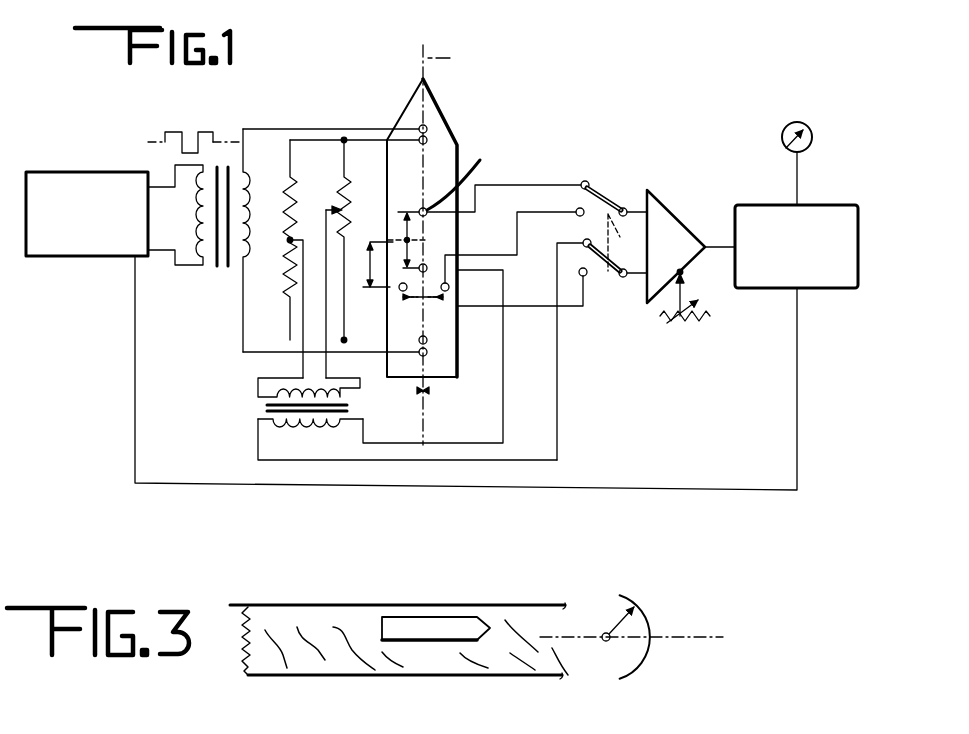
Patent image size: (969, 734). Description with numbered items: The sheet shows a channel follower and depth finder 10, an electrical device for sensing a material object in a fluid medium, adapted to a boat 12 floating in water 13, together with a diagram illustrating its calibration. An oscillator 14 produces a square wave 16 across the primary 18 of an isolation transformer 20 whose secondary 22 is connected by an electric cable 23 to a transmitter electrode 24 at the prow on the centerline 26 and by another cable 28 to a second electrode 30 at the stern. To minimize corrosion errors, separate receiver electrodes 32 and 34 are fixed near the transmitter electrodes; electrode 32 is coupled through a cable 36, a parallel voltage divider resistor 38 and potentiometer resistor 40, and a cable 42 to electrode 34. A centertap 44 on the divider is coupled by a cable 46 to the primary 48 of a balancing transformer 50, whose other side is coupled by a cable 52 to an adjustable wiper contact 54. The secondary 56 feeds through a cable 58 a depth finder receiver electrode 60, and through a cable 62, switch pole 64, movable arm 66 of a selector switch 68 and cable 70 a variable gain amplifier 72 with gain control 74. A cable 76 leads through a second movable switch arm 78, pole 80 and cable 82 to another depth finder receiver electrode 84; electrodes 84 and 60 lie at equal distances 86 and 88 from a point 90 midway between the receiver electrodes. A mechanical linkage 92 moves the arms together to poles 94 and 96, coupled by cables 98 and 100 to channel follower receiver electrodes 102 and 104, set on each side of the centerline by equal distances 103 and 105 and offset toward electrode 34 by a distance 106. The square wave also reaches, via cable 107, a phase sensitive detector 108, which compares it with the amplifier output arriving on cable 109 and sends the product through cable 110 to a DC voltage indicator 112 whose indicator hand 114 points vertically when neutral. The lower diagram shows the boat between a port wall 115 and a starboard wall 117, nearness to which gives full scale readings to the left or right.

In FIG. 1, the channel follower and depth finder 10 is at (110, 140).
In FIG. 1, the boat 12 is at (445, 170).
In FIG. 3, the boat 12 is at (436, 628).
In FIG. 3, the water 13 is at (393, 660).
In FIG. 1, the oscillator 14 is at (45, 258).
In FIG. 1, the square wave 16 is at (168, 128).
In FIG. 1, the primary 18 is at (195, 218).
In FIG. 1, the isolation transformer 20 is at (218, 268).
In FIG. 1, the secondary 22 is at (249, 177).
In FIG. 1, the electric cable 23 is at (280, 128).
In FIG. 1, the transmitter electrode 24 is at (428, 126).
In FIG. 1, the centerline 26 is at (430, 415).
In FIG. 1, the electric cable 28 is at (240, 328).
In FIG. 1, the second electrode 30 is at (428, 352).
In FIG. 1, the receiver electrode 32 is at (428, 140).
In FIG. 1, the receiver electrode 34 is at (428, 340).
In FIG. 1, the electric cable 36 is at (365, 140).
In FIG. 1, the voltage divider resistor 38 is at (292, 180).
In FIG. 1, the potentiometer resistor 40 is at (351, 208).
In FIG. 1, the electric cable 42 is at (366, 343).
In FIG. 1, the centertap 44 is at (288, 242).
In FIG. 1, the electric cable 46 is at (304, 240).
In FIG. 1, the primary 48 is at (258, 378).
In FIG. 1, the balancing transformer 50 is at (265, 408).
In FIG. 1, the electric cable 52 is at (320, 307).
In FIG. 1, the adjustable wiper contact 54 is at (333, 205).
In FIG. 1, the secondary 56 is at (277, 438).
In FIG. 1, the electric cable 58 is at (430, 446).
In FIG. 1, the depth finder receiver electrode 60 is at (460, 249).
In FIG. 1, the electric cable 62 is at (440, 462).
In FIG. 1, the switch pole 64 is at (583, 242).
In FIG. 1, the movable arm 66 is at (612, 275).
In FIG. 1, the selector switch 68 is at (618, 146).
In FIG. 1, the electric cable 70 is at (646, 290).
In FIG. 1, the variable gain amplifier 72 is at (685, 224).
In FIG. 1, the variable gain control 74 is at (690, 326).
In FIG. 1, the electric cable 76 is at (647, 190).
In FIG. 1, the second movable switch arm 78 is at (603, 196).
In FIG. 1, the switch pole 80 is at (584, 181).
In FIG. 1, the electric cable 82 is at (531, 184).
In FIG. 1, the depth finder receiver electrode 84 is at (455, 178).
In FIG. 1, the distance 86 is at (398, 212).
In FIG. 1, the distance 88 is at (399, 280).
In FIG. 1, the point 90 is at (458, 231).
In FIG. 1, the mechanical linkage 92 is at (622, 242).
In FIG. 1, the switch pole 94 is at (579, 274).
In FIG. 1, the switch pole 96 is at (576, 211).
In FIG. 1, the electric cable 98 is at (576, 310).
In FIG. 1, the electric cable 100 is at (514, 222).
In FIG. 1, the channel follower receiver electrode 102 is at (400, 291).
In FIG. 1, the distance 103 is at (410, 299).
In FIG. 1, the channel follower receiver electrode 104 is at (449, 287).
In FIG. 1, the distance 105 is at (428, 299).
In FIG. 1, the distance 106 is at (362, 260).
In FIG. 1, the electric cable 107 is at (134, 352).
In FIG. 1, the phase sensitive detector 108 is at (826, 290).
In FIG. 1, the electric cable 109 is at (720, 252).
In FIG. 1, the electric cable 110 is at (800, 182).
In FIG. 1, the DC voltage indicator 112 is at (812, 142).
In FIG. 3, the DC voltage indicator 112 is at (658, 605).
In FIG. 1, the indicator hand 114 is at (781, 136).
In FIG. 3, the indicator hand 114 is at (618, 622).
In FIG. 3, the port wall 115 is at (285, 605).
In FIG. 3, the starboard wall 117 is at (325, 676).